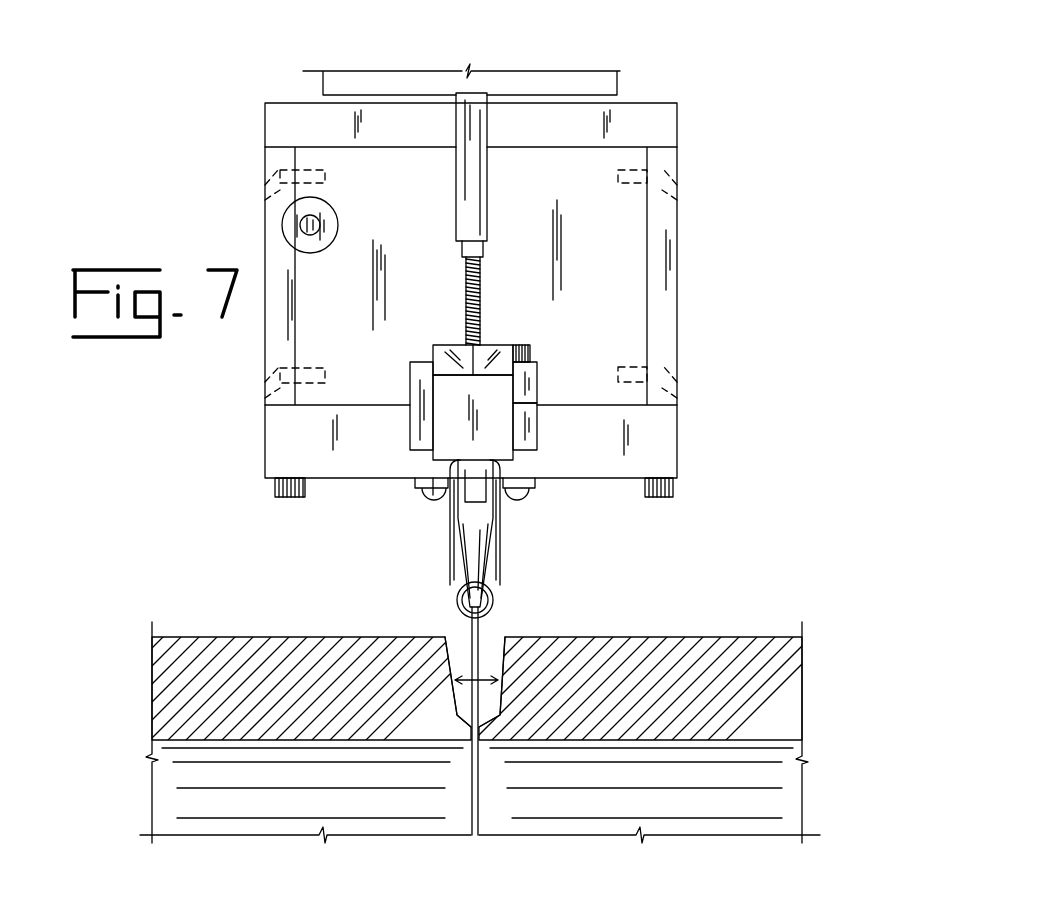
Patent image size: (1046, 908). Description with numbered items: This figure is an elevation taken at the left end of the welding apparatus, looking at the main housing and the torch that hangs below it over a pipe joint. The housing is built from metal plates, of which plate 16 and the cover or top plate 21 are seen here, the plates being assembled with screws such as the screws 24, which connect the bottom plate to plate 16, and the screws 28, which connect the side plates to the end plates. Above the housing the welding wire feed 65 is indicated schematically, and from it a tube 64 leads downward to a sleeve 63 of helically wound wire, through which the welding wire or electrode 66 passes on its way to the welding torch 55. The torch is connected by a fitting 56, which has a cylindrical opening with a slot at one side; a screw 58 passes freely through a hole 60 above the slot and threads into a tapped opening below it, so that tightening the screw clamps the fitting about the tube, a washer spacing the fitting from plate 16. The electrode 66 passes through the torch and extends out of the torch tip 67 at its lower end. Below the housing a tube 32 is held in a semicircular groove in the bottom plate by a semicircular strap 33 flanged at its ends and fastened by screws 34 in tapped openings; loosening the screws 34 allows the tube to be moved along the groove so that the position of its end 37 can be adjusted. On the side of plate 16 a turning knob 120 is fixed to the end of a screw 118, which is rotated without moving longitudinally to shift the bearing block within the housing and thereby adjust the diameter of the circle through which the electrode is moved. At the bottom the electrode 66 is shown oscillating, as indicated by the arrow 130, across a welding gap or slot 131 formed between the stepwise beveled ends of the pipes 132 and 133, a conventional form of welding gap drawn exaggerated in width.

The plate 16 is at (523, 270).
The cover or top plate 21 is at (678, 125).
The screws 24 is at (275, 493).
The screws 28 is at (265, 199).
The tube 32 is at (499, 569).
The semicircular strap 33 is at (445, 497).
The screws 34 is at (428, 492).
The end of tube 37 is at (454, 603).
The welding torch 55 is at (400, 381).
The fitting 56 is at (410, 428).
The screw 58 is at (532, 355).
The hole 60 is at (447, 345).
The sleeve of helically wound wire 63 is at (466, 300).
The tube 64 is at (456, 192).
The welding wire feed 65 is at (623, 83).
The welding wire or electrode 66 is at (480, 641).
The torch tip 67 is at (491, 532).
The screw 118 is at (310, 236).
The turning knob 120 is at (283, 233).
The arrow 130 is at (506, 637).
The welding gap or slot 131 is at (448, 634).
The pipe 132 is at (326, 637).
The pipe 133 is at (614, 637).